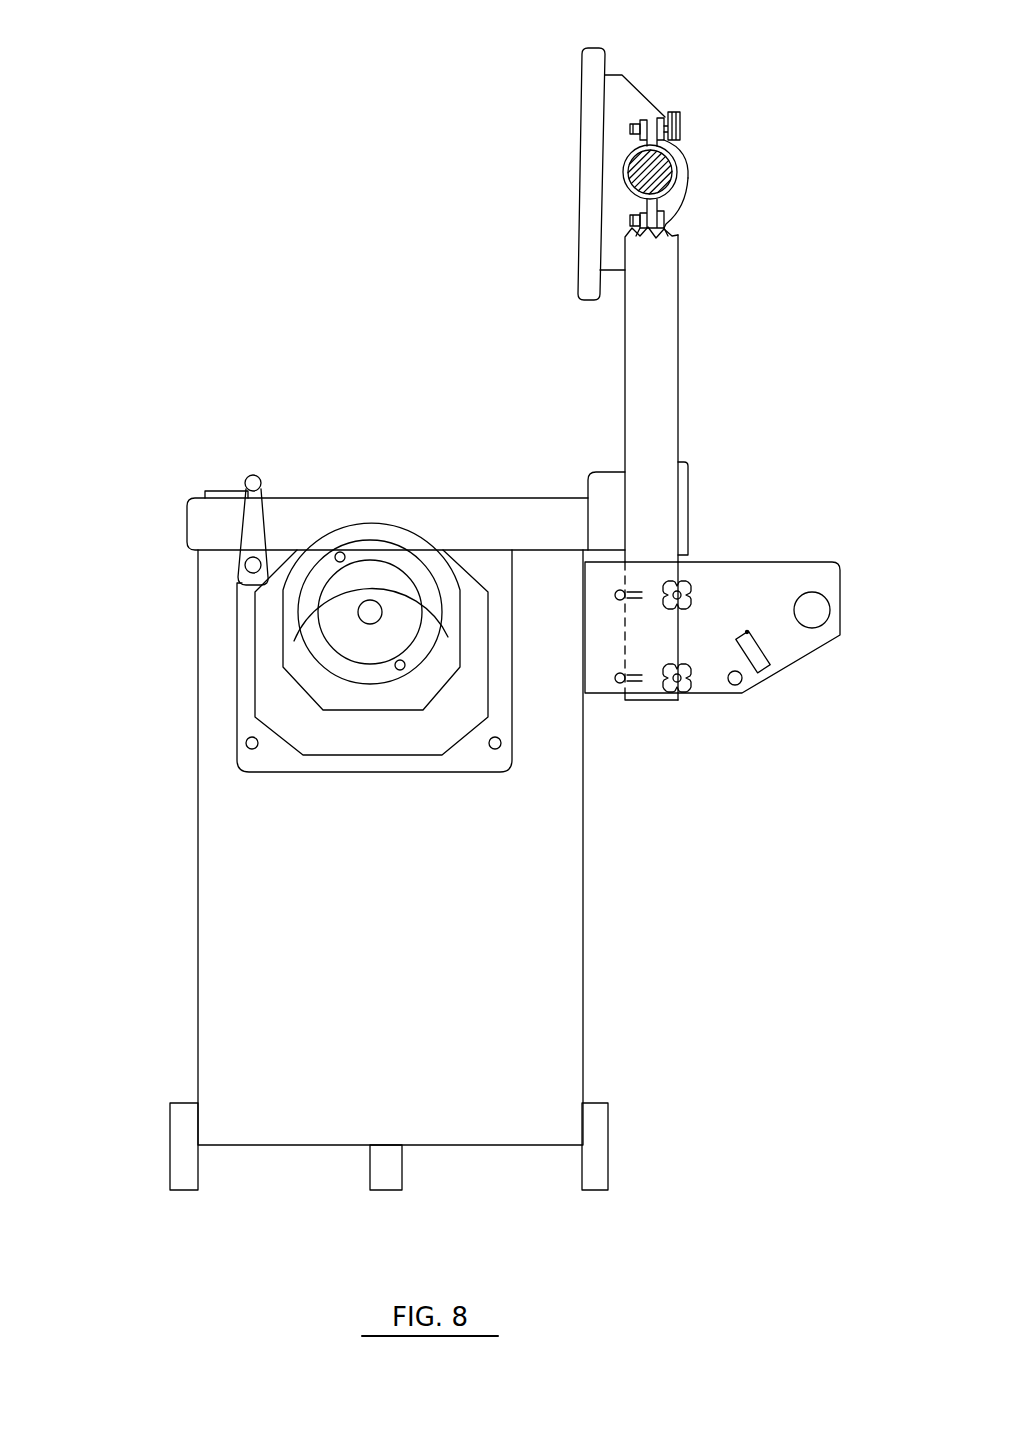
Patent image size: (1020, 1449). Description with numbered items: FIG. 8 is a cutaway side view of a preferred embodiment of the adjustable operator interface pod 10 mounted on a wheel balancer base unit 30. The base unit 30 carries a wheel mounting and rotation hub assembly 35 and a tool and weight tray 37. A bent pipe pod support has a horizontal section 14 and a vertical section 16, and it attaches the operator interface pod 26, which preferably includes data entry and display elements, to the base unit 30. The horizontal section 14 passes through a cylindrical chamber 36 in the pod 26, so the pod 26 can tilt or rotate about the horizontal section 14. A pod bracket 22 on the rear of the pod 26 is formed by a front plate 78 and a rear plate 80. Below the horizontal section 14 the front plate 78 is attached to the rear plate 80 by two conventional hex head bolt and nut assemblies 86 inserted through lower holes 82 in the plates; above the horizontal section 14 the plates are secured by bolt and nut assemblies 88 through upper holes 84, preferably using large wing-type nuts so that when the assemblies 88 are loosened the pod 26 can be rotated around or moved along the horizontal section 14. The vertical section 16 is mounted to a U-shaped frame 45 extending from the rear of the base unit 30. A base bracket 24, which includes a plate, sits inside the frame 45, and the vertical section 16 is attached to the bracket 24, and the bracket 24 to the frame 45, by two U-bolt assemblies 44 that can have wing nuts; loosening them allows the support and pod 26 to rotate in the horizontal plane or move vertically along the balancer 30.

The adjustable operator interface pod 10 is at (678, 330).
The horizontal section 14 is at (670, 172).
The vertical section 16 is at (678, 412).
The pod bracket 22 is at (685, 182).
The base bracket 24 is at (679, 640).
The operator interface pod 26 is at (617, 75).
The wheel balancer base unit 30 is at (583, 905).
The wheel mounting and rotation hub assembly 35 is at (340, 625).
The cylindrical chamber 36 is at (683, 140).
The tool and weight tray 37 is at (216, 523).
The U-bolt assemblies 44 is at (682, 585).
The U-shaped frame 45 is at (772, 588).
The front plate 78 is at (632, 178).
The rear plate 80 is at (680, 200).
The lower holes 82 is at (672, 228).
The upper holes 84 is at (648, 117).
The hex head bolt and nut assemblies 86 is at (680, 213).
The bolt and nut assemblies 88 is at (635, 127).